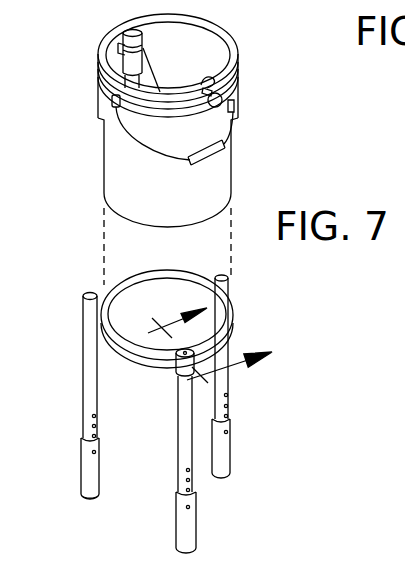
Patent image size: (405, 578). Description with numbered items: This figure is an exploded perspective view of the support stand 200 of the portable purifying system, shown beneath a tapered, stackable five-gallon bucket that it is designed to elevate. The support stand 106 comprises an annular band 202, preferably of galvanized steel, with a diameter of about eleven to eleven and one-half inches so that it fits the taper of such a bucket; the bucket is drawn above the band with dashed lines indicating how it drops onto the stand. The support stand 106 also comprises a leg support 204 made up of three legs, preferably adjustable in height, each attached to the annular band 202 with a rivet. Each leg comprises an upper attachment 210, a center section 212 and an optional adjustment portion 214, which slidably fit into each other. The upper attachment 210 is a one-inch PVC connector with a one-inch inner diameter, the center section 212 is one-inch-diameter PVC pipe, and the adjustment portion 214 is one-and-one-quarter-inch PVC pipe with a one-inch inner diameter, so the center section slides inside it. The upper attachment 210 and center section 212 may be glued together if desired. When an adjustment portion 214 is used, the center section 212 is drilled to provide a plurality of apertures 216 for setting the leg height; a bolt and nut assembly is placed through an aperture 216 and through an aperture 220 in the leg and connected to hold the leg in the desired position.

The support stand 106 is at (94, 514).
The support stand 200 is at (172, 423).
The annular band 202 is at (236, 320).
The leg support 204 is at (238, 461).
The upper attachment 210 is at (83, 305).
The center section 212 is at (83, 364).
The adjustment portion 214 is at (82, 440).
The aperture 216 is at (229, 432).
The aperture 220 is at (228, 416).